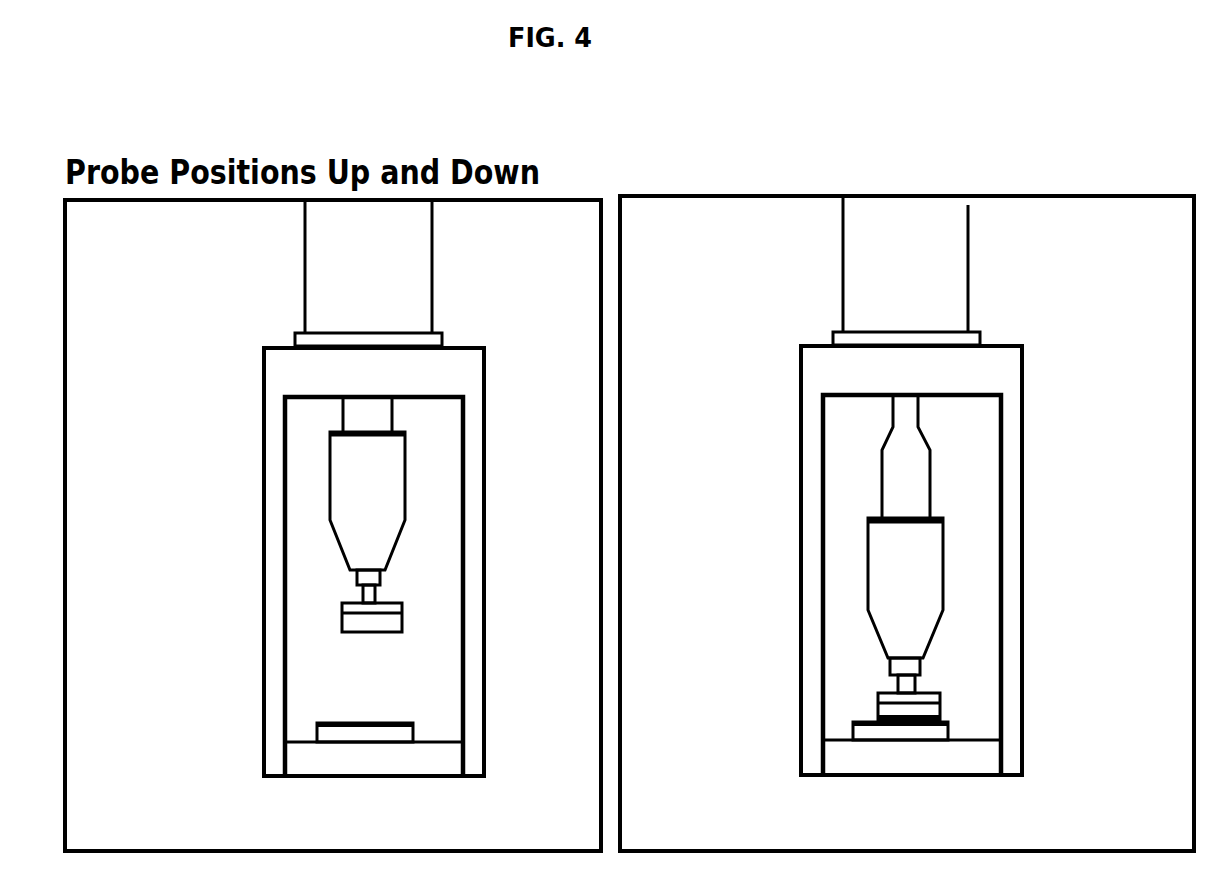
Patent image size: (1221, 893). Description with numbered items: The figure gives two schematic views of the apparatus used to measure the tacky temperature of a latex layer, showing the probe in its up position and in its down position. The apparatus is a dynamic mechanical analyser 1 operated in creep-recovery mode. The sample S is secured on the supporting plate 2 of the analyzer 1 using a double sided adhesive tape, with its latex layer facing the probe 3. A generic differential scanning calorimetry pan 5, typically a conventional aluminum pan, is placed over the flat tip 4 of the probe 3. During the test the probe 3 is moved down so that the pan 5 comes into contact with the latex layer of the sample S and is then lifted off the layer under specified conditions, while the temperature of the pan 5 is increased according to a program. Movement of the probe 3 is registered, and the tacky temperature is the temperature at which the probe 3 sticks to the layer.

The analyzer 1 is at (445, 299).
The supporting plate 2 is at (440, 789).
The probe 3 is at (419, 484).
The flat tip 4 is at (401, 595).
The differential scanning calorimetry pan 5 is at (400, 643).
The sample S is at (350, 709).